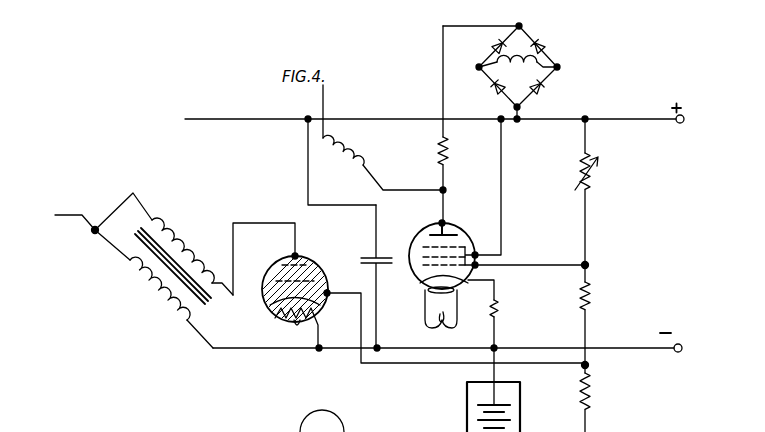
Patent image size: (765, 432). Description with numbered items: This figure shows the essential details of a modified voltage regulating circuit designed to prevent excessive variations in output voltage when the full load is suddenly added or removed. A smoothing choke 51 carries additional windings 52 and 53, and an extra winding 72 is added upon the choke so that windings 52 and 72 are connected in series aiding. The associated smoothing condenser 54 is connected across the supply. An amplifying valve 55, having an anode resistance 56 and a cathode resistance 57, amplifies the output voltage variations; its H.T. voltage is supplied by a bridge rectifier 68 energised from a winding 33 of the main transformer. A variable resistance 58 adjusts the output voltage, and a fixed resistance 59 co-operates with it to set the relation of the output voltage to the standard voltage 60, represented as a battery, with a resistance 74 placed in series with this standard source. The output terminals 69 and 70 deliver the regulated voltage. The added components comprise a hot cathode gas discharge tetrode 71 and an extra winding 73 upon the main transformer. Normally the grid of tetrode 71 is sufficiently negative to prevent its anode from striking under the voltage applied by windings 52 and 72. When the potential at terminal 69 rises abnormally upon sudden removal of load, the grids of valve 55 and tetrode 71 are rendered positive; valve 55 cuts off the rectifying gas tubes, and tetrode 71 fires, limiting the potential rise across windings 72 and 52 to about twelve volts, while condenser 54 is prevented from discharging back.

The winding 33 is at (533, 71).
The smoothing choke 51 is at (182, 275).
The winding 52 is at (134, 281).
The winding 53 is at (383, 137).
The smoothing condenser 54 is at (371, 276).
The amplifying valve 55 is at (488, 223).
The anode resistance 56 is at (457, 124).
The cathode resistance 57 is at (495, 314).
The variable resistance 58 is at (599, 194).
The fixed resistance 59 is at (597, 317).
The standard voltage 60 is at (472, 390).
The bridge rectifier 68 is at (515, 43).
The output terminal 69 is at (671, 127).
The output terminal 70 is at (670, 357).
The hot cathode gas discharge tetrode 71 is at (298, 293).
The extra winding 72 is at (164, 244).
The extra winding 73 is at (280, 328).
The resistance 74 is at (598, 398).